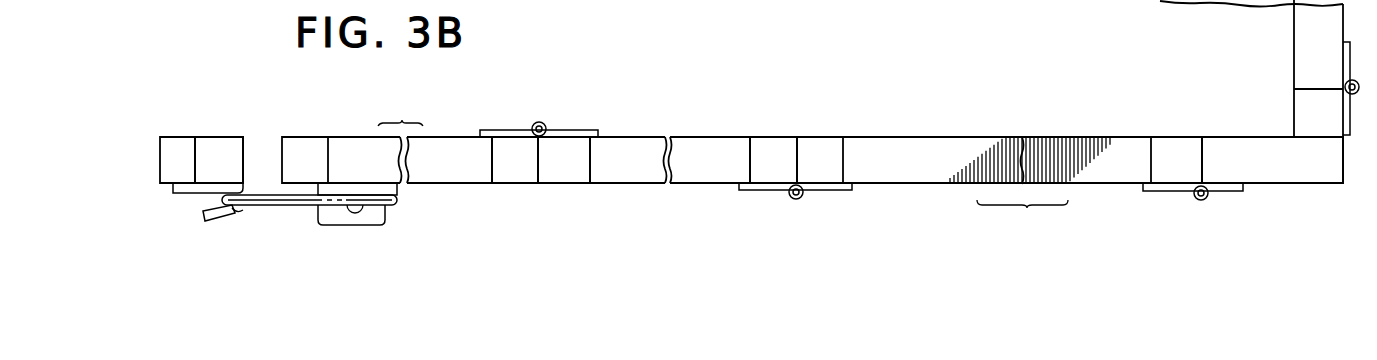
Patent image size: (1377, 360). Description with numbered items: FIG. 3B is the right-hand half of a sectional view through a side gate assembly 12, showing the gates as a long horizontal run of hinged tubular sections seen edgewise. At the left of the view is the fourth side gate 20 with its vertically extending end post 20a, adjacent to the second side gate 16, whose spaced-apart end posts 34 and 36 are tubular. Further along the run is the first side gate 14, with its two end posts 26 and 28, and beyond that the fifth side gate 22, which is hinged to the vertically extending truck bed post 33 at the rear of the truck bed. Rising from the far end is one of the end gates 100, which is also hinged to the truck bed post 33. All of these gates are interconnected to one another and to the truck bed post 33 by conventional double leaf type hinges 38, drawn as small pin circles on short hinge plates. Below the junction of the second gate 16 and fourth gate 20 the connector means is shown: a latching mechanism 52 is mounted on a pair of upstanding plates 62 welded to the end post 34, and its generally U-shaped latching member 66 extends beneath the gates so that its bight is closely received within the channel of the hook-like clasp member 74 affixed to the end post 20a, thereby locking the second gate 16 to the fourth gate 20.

The side gate assembly 12 is at (880, 106).
The first side gate 14 is at (688, 133).
The second side gate 16 is at (445, 133).
The fourth side gate 20 is at (182, 135).
The end post 20a is at (218, 142).
The fifth side gate 22 is at (1051, 136).
The end post 26 is at (573, 165).
The end post 28 is at (767, 142).
The truck bed post 33 is at (1295, 168).
The end post 34 is at (305, 142).
The end post 36 is at (515, 165).
The double leaf type hinge 38 is at (533, 122).
The latching mechanism 52 is at (302, 186).
The upstanding plate 62 is at (380, 213).
The latching member 66 is at (268, 190).
The clasp member 74 is at (233, 212).
The gate 100 is at (1308, 65).